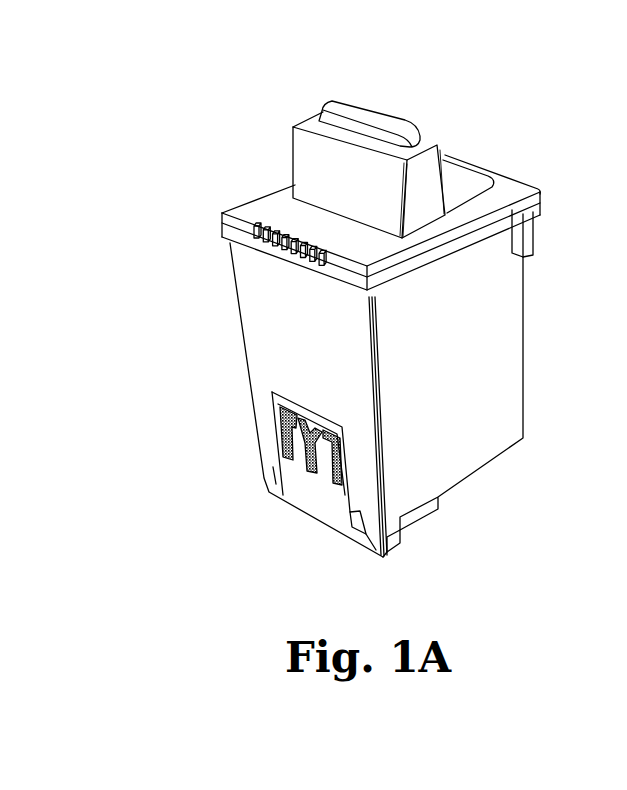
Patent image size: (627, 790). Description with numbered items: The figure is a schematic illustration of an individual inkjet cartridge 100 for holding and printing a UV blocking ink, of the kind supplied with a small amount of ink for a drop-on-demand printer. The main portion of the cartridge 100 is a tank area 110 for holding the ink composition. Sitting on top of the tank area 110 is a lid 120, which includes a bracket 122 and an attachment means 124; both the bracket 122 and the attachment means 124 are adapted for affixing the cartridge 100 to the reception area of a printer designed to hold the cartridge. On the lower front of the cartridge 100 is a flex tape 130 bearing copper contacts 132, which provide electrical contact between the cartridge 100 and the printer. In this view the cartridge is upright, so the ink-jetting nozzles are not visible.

The cartridge 100 is at (255, 168).
The tank area 110 is at (282, 328).
The lid 120 is at (513, 189).
The bracket 122 is at (257, 241).
The attachment means 124 is at (430, 168).
The flex tape 130 is at (321, 503).
The copper contacts 132 is at (277, 428).